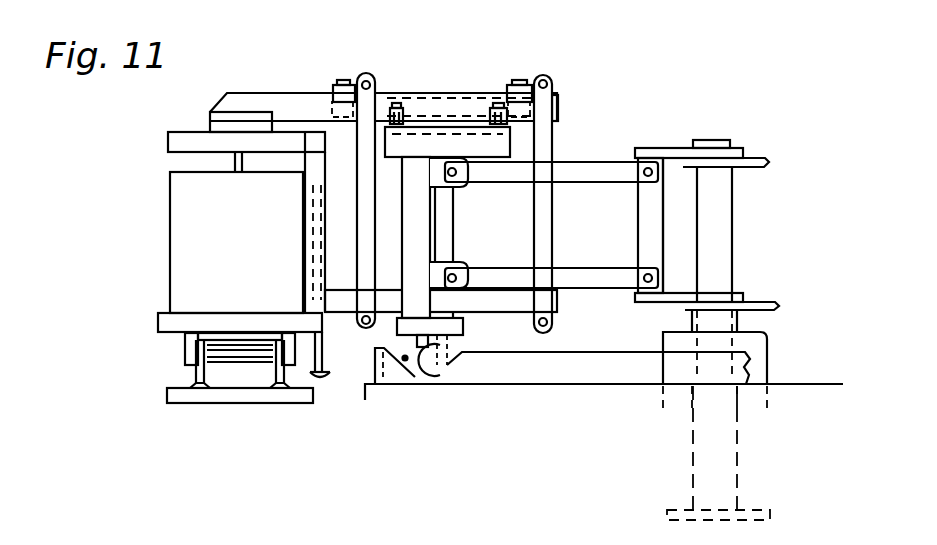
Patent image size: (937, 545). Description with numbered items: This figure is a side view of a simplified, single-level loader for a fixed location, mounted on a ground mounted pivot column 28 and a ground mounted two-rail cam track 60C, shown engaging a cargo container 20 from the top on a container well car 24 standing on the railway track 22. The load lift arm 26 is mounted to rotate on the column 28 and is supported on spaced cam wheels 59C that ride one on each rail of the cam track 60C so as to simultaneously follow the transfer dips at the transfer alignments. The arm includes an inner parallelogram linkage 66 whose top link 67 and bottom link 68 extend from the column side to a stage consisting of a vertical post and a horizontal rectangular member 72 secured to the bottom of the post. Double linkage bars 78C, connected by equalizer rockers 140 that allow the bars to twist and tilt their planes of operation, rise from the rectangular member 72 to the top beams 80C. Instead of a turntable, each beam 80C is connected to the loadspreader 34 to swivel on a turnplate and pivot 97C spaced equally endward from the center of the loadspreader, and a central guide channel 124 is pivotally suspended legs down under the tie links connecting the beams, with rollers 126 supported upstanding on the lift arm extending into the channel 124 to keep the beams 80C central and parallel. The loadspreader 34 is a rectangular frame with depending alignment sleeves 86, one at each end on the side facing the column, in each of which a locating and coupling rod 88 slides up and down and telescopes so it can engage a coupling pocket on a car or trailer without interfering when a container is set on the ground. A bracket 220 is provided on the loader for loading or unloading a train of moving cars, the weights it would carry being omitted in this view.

The beams 80C is at (240, 93).
The turnplate and pivot 97C is at (210, 125).
The loadspreader 34 is at (168, 146).
The cargo container 20 is at (170, 238).
The container well car 24 is at (158, 320).
The railway track 22 is at (238, 398).
The alignment sleeve 86 is at (322, 302).
The locating and coupling rod 88 is at (332, 378).
The double linkage bars 78C is at (414, 98).
The rollers 126 is at (416, 95).
The central guide channel 124 is at (437, 90).
The load lift arm 26 is at (477, 84).
The equalizer rockers 140 is at (364, 75).
The horizontal rectangular member 72 is at (500, 316).
The inner parallelogram linkage 66 is at (625, 184).
The bottom link 68 is at (587, 290).
The top link 67 is at (597, 162).
The bracket 220 is at (675, 148).
The vertical column 28 is at (733, 256).
The cam wheels 59C is at (420, 382).
The two-rail cam track 60C is at (532, 377).